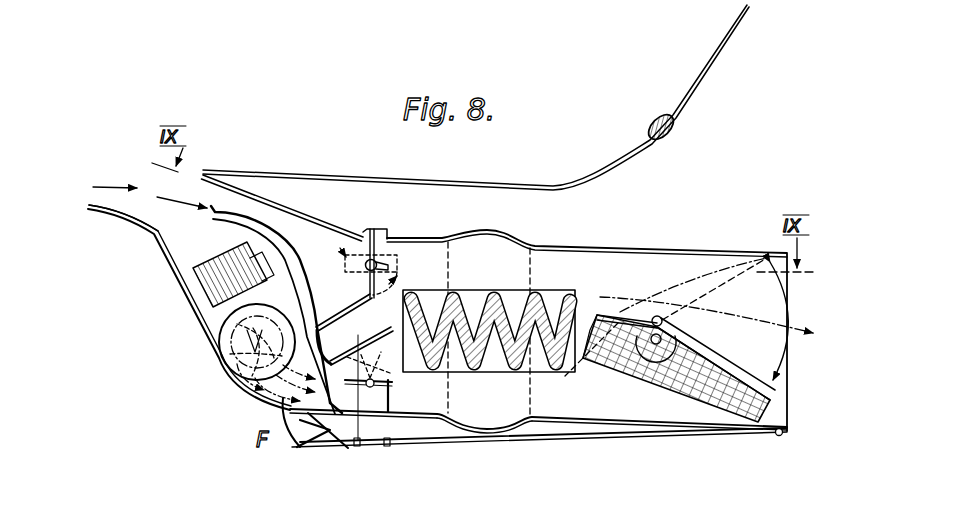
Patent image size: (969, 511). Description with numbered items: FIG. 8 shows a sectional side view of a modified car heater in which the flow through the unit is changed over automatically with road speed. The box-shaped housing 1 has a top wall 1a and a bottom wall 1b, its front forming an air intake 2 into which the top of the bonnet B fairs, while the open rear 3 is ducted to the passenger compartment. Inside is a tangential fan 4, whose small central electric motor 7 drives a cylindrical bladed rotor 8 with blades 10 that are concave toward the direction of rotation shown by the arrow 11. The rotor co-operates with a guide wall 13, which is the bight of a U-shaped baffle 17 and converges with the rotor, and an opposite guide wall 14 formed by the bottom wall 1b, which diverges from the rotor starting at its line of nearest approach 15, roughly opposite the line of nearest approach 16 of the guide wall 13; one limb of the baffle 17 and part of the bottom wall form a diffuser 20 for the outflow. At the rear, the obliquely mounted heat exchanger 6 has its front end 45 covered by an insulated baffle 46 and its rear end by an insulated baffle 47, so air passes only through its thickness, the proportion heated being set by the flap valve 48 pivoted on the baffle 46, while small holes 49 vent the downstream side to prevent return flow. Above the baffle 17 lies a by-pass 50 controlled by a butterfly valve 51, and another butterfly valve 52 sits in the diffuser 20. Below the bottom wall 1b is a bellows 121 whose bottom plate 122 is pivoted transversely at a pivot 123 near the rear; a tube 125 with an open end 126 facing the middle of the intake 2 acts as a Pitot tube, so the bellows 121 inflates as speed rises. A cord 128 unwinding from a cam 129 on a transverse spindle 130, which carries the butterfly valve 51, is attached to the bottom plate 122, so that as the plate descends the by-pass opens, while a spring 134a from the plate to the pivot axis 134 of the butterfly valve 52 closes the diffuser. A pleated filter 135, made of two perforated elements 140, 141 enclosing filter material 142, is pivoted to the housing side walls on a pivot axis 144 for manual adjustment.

The housing 1 is at (269, 187).
The top wall 1a is at (567, 251).
The bottom wall 1b is at (444, 450).
The air intake 2 is at (192, 187).
The open rear 3 is at (787, 355).
The tangential fan 4 is at (221, 371).
The heat exchanger 6 is at (659, 404).
The electric motor 7 is at (205, 297).
The bladed rotor 8 is at (229, 325).
The blades 10 is at (251, 380).
The arrow 11 is at (266, 392).
The guide wall 13 is at (324, 337).
The guide wall 14 is at (279, 410).
The line of nearest approach 15 is at (216, 357).
The line of nearest approach 16 is at (350, 292).
The U-shaped baffle 17 is at (351, 287).
The diffuser 20 is at (365, 346).
The front end 45 is at (564, 379).
The insulated baffle 46 is at (645, 286).
The insulated baffle 47 is at (778, 434).
The flap valve 48 is at (723, 350).
The small holes 49 is at (706, 295).
The by-pass 50 is at (322, 243).
The butterfly valve 51 is at (371, 229).
The butterfly valve 52 is at (396, 386).
The bellows 121 is at (357, 447).
The bottom plate 122 is at (478, 436).
The pivot 123 is at (778, 436).
The tube 125 is at (282, 228).
The open end 126 is at (155, 237).
The cord 128 is at (440, 250).
The cam 129 is at (377, 259).
The transverse spindle 130 is at (408, 282).
The pivot axis 134 is at (338, 439).
The spring 134a is at (413, 450).
The filter 135 is at (470, 377).
The perforated element 140 is at (497, 264).
The perforated element 141 is at (466, 316).
The filter material 142 is at (505, 312).
The pivot axis 144 is at (531, 423).
The bonnet B is at (503, 183).